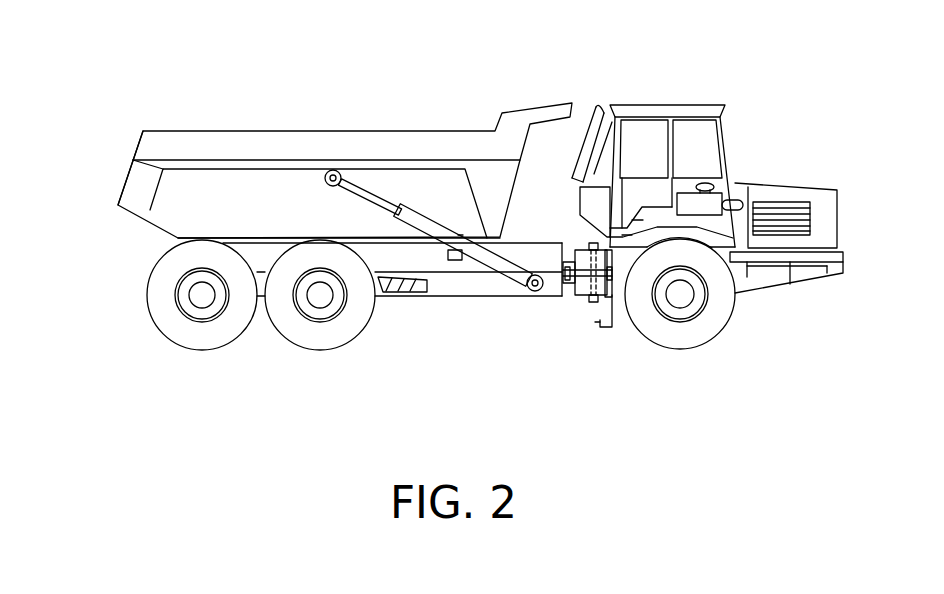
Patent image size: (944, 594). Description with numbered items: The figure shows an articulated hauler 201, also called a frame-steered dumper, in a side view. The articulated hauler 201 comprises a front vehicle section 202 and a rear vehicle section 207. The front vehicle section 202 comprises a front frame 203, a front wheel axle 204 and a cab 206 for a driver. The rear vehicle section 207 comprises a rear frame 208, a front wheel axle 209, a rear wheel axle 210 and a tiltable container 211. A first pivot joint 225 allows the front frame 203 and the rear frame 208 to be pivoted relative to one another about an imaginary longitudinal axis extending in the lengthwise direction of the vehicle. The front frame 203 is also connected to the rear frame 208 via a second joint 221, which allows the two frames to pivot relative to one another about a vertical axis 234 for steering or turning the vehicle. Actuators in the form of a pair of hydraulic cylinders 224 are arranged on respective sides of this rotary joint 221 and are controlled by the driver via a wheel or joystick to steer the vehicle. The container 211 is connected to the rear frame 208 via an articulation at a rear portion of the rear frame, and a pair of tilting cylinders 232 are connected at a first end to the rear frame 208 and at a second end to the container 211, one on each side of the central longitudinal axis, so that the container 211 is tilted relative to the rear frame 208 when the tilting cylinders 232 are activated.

The articulated hauler 201 is at (339, 145).
The front vehicle section 202 is at (710, 158).
The front frame 203 is at (586, 303).
The front wheel axle 204 is at (683, 296).
The cab 206 is at (633, 110).
The rear vehicle section 207 is at (345, 145).
The rear frame 208 is at (487, 287).
The front wheel axle 209 is at (320, 297).
The rear wheel axle 210 is at (203, 297).
The tiltable container 211 is at (146, 178).
The second joint 221 is at (566, 363).
The hydraulic cylinders 224 is at (566, 290).
The first pivot joint 225 is at (534, 344).
The tilting cylinders 232 is at (478, 263).
The vertical axis 234 is at (600, 325).